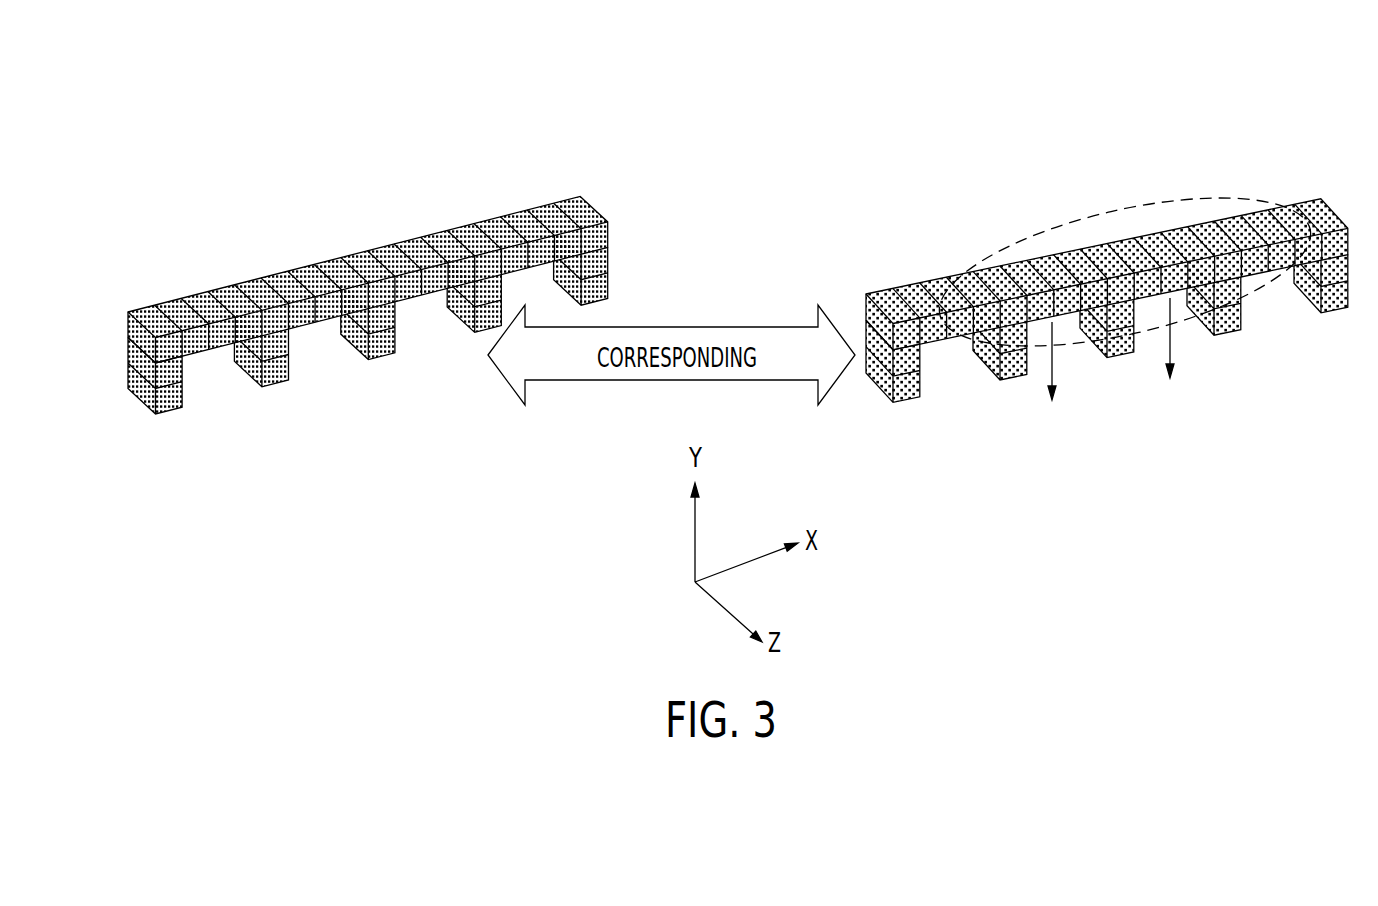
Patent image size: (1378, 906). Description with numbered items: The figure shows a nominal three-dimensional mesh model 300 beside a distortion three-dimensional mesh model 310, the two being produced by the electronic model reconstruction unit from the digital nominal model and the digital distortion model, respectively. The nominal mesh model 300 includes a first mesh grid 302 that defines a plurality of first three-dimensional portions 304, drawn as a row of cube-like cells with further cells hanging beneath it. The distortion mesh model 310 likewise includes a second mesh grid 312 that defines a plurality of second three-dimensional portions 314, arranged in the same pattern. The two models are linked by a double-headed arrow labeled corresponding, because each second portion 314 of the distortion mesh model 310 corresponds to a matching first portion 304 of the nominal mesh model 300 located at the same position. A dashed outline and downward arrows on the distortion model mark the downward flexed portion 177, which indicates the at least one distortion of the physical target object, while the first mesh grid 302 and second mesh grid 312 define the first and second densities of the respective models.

The nominal 3D mesh model 300 is at (307, 238).
The first mesh grid 302 is at (150, 290).
The first 3D portions 304 is at (140, 322).
The distortion 3D mesh model 310 is at (1026, 158).
The second mesh grid 312 is at (863, 287).
The second 3D portions 314 is at (930, 281).
The downward flexed portion 177 is at (1170, 202).